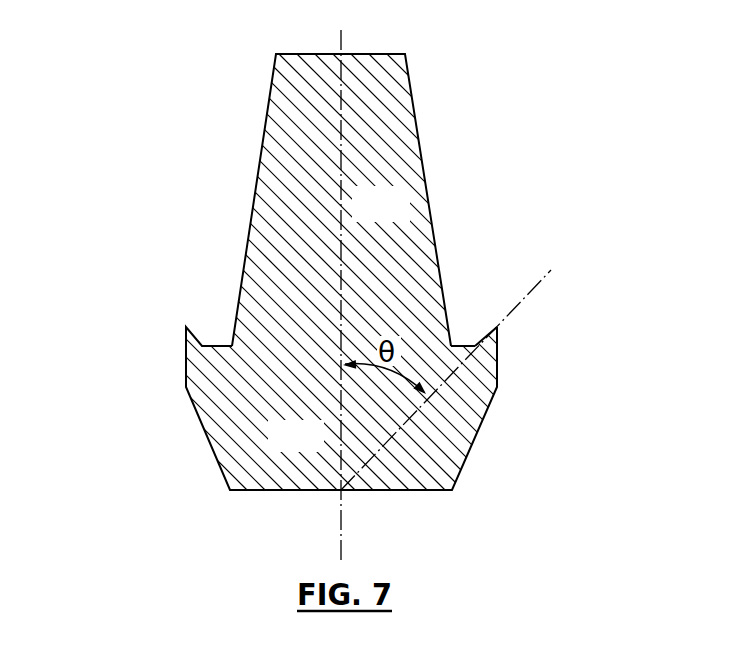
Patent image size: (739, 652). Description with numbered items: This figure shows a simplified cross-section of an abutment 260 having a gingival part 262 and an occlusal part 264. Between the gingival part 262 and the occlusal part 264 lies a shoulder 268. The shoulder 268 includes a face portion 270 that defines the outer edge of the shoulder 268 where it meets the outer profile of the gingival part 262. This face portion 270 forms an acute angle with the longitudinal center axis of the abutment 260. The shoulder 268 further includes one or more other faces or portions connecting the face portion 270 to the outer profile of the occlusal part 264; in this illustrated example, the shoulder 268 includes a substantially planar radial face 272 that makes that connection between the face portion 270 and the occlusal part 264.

The abutment 260 is at (196, 180).
The gingival part 262 is at (318, 449).
The occlusal part 264 is at (403, 218).
The shoulder 268 is at (483, 290).
The face portion 270 is at (493, 333).
The substantially planar radial face 272 is at (457, 345).